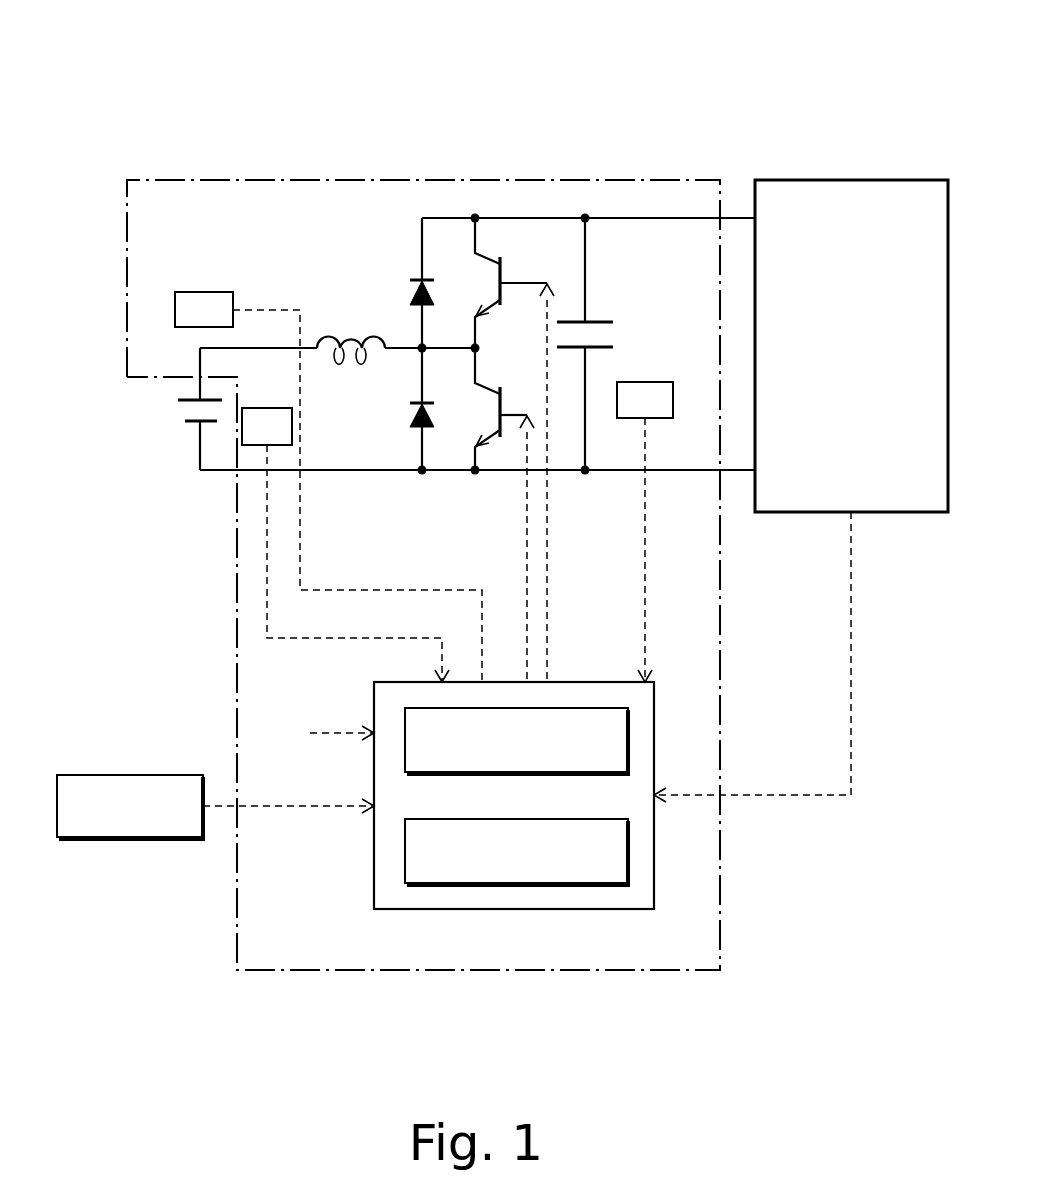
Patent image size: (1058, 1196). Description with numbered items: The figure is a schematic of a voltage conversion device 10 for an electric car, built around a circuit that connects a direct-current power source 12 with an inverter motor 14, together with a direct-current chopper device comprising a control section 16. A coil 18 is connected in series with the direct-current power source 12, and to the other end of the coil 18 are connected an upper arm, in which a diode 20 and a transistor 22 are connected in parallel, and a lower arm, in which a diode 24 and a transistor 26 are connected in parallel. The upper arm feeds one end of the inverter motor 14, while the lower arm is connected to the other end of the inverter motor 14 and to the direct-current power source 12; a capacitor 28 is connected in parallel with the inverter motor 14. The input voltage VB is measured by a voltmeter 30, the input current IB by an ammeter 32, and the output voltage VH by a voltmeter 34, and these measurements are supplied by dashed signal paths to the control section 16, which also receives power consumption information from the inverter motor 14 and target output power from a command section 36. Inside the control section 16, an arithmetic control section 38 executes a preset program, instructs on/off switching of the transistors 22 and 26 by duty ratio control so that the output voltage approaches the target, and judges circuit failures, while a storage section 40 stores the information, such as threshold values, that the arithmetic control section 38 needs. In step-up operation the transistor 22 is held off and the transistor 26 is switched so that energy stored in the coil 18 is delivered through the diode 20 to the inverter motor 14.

The voltage conversion device 10 is at (298, 152).
The direct-current power source 12 is at (178, 412).
The inverter motor 14 is at (862, 180).
The control section 16 is at (655, 893).
The coil 18 is at (354, 328).
The diode 20 is at (408, 288).
The transistor 22 is at (508, 271).
The diode 24 is at (410, 415).
The transistor 26 is at (485, 382).
The capacitor 28 is at (600, 318).
The voltmeter 30 is at (258, 445).
The ammeter 32 is at (203, 292).
The voltmeter 34 is at (660, 418).
The command section 36 is at (130, 775).
The arithmetic control section 38 is at (630, 738).
The storage section 40 is at (630, 853).